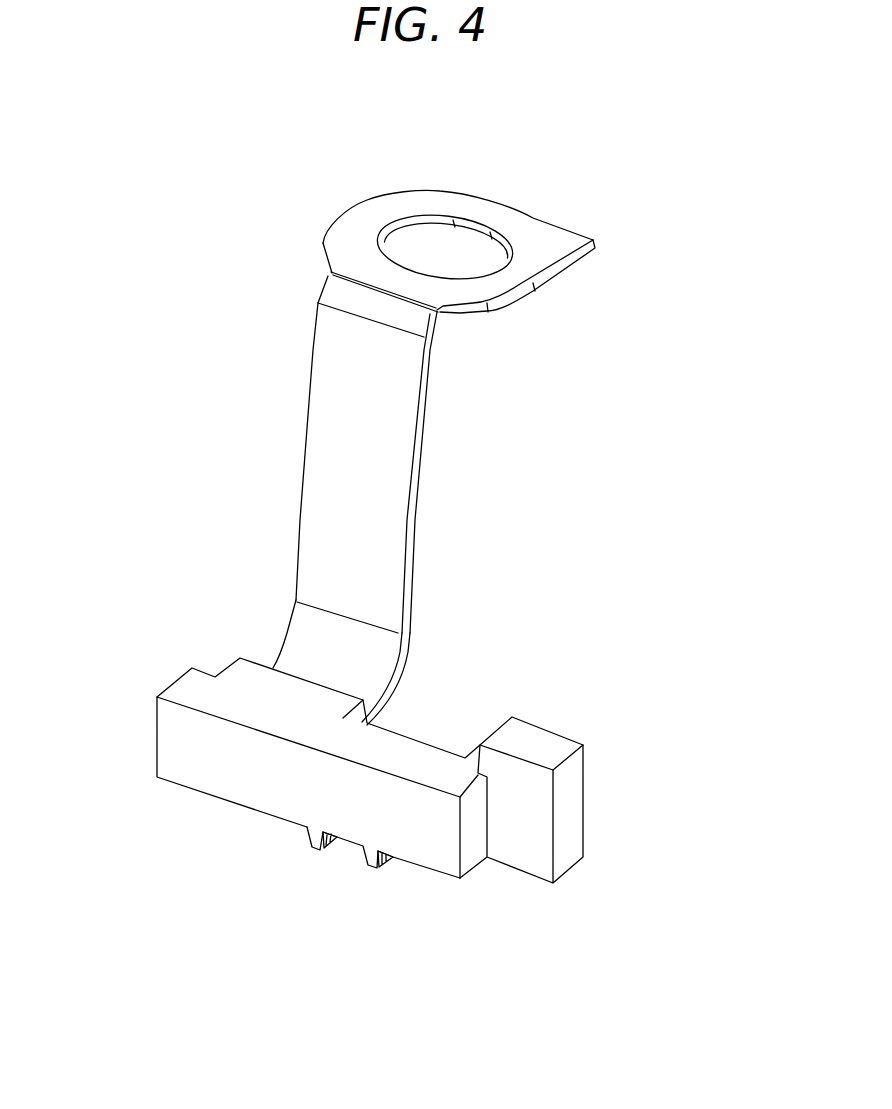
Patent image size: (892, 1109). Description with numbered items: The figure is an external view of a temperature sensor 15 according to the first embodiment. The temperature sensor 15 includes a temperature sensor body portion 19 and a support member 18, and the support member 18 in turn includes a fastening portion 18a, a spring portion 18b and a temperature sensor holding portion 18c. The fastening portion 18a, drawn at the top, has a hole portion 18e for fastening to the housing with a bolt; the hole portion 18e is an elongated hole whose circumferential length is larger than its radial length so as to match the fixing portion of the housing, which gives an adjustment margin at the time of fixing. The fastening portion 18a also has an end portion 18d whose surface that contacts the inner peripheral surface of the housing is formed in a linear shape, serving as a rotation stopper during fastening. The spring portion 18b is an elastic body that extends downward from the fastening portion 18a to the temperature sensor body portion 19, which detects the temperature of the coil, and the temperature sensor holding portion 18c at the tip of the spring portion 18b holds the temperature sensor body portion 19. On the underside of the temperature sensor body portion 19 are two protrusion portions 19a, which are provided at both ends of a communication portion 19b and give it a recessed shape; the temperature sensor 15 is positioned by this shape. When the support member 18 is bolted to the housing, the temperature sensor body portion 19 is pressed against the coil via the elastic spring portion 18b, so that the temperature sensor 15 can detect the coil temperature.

The temperature sensor 15 is at (109, 205).
The support member 18 is at (693, 160).
The fastening portion 18a is at (550, 238).
The spring portion 18b is at (372, 477).
The temperature sensor holding portion 18c is at (347, 664).
The end portion 18d is at (510, 209).
The hole portion 18e is at (480, 258).
The temperature sensor body portion 19 is at (361, 771).
The protrusion portions 19a is at (310, 846).
The communication portion 19b is at (341, 855).